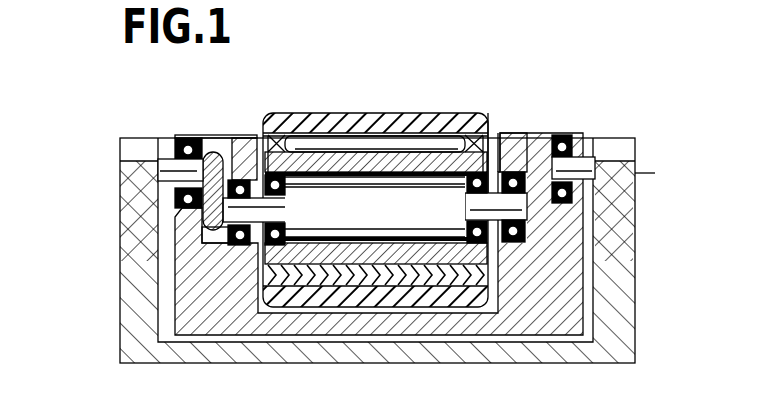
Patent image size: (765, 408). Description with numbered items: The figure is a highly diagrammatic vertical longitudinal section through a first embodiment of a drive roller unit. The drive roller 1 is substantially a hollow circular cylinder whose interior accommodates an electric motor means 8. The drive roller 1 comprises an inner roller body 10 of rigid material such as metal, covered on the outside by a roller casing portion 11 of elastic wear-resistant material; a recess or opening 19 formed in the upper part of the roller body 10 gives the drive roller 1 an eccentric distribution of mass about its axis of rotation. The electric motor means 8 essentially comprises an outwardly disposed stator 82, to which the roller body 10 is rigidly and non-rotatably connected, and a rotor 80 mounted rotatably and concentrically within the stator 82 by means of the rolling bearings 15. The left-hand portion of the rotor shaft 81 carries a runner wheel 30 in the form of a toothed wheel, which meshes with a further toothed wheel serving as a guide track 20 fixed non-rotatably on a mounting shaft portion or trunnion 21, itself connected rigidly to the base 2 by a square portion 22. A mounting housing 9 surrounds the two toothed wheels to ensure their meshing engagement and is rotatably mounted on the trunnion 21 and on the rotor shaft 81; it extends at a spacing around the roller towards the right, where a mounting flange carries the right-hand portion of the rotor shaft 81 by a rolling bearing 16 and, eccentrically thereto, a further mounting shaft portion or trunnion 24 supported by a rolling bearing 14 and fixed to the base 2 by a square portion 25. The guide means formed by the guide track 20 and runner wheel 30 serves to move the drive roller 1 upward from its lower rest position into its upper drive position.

The drive roller 1 is at (489, 113).
The base 2 is at (615, 245).
The electric motor means 8 is at (490, 133).
The mounting housing 9 is at (547, 292).
The roller body 10 is at (282, 113).
The roller casing portion 11 is at (330, 113).
The rolling bearing 14 is at (567, 135).
The rolling bearings 15 is at (287, 221).
The rolling bearing 16 is at (247, 136).
The recess or opening 19 is at (452, 142).
The guide track 20 is at (213, 135).
The mounting shaft portion or trunnion 21 is at (166, 135).
The square portion 22 is at (120, 175).
The mounting shaft portion or trunnion 24 is at (582, 163).
The square portion 25 is at (655, 173).
The runner wheel 30 is at (185, 218).
The rotor 80 is at (442, 168).
The rotor shaft 81 is at (275, 203).
The stator 82 is at (373, 182).